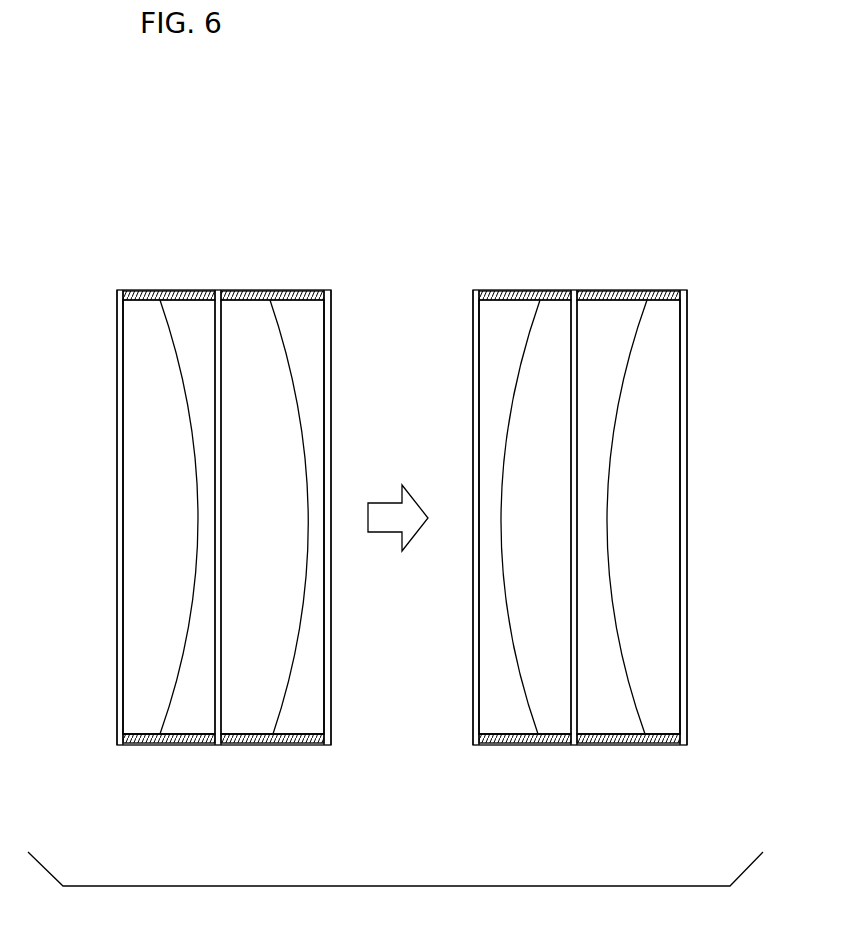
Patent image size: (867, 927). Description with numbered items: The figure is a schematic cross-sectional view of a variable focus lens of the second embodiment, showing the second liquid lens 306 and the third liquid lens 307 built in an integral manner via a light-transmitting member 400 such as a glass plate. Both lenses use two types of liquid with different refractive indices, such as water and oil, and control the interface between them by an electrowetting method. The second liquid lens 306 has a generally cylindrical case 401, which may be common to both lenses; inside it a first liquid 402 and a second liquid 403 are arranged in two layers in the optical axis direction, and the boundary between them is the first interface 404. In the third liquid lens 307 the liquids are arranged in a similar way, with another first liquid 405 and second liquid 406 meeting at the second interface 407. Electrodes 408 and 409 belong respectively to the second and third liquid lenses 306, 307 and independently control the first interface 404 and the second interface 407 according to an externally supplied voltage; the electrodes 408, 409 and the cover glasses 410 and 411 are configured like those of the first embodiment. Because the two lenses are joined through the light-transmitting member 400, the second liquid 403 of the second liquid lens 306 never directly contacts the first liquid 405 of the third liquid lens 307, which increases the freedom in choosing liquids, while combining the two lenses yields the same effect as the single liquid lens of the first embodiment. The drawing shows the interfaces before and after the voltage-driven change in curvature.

The case 401 is at (130, 289).
The cover glass 410 is at (116, 442).
The cover glass 411 is at (331, 427).
The light-transmitting member 400 is at (218, 291).
The electrode 408 is at (160, 291).
The electrode 409 is at (307, 291).
The second liquid lens 306 is at (187, 258).
The third liquid lens 307 is at (272, 258).
The first interface 404 is at (167, 705).
The second interface 407 is at (276, 705).
The second liquid 403 is at (190, 718).
The first liquid 405 is at (250, 718).
The first liquid 402 is at (145, 633).
The second liquid 406 is at (315, 675).